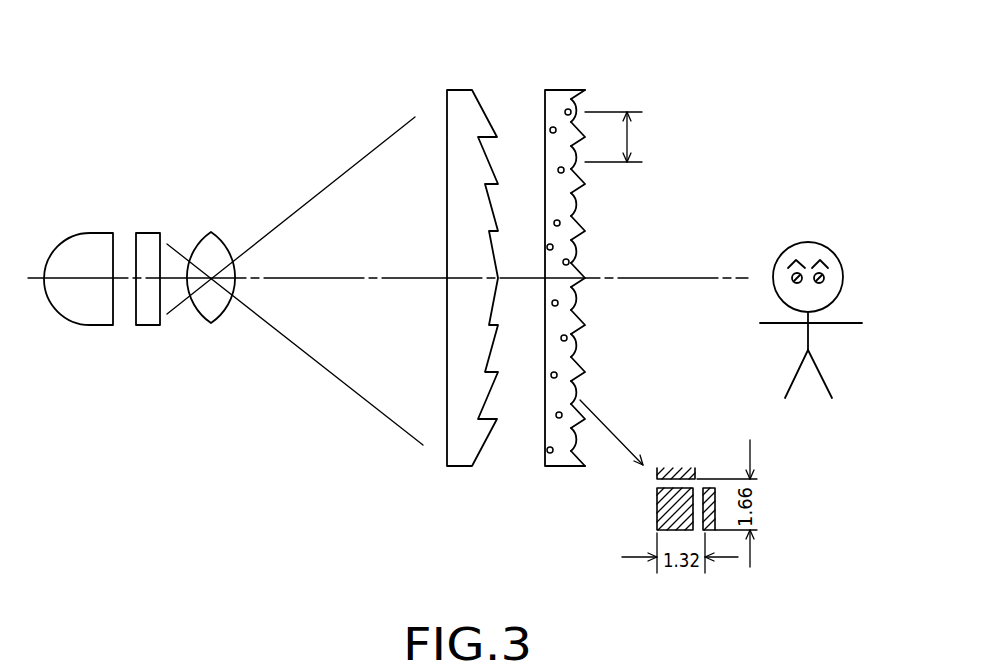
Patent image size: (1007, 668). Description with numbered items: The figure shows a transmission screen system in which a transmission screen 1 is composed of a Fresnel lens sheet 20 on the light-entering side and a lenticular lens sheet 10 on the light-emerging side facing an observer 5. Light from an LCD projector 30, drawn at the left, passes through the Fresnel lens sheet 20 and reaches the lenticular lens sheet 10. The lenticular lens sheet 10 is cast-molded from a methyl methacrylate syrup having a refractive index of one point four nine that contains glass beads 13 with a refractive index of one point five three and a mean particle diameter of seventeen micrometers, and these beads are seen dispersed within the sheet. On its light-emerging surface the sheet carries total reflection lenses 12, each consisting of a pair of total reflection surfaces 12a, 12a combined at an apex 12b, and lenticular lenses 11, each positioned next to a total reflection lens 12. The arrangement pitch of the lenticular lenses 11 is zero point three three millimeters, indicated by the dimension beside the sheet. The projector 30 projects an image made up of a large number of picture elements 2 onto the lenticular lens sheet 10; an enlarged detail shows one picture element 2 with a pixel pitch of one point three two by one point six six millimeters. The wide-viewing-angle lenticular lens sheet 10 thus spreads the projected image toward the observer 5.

The transmission screen 1 is at (493, 72).
The picture elements 2 is at (678, 492).
The observer 5 is at (845, 273).
The lenticular lens sheet 10 is at (600, 312).
The lenticular lenses 11 is at (578, 362).
The total reflection lenses 12 is at (642, 278).
The total reflection surfaces 12a is at (579, 309).
The apex 12b is at (586, 325).
The glass beads 13 is at (547, 452).
The Fresnel lens sheet 20 is at (465, 455).
The LCD projector 30 is at (222, 333).